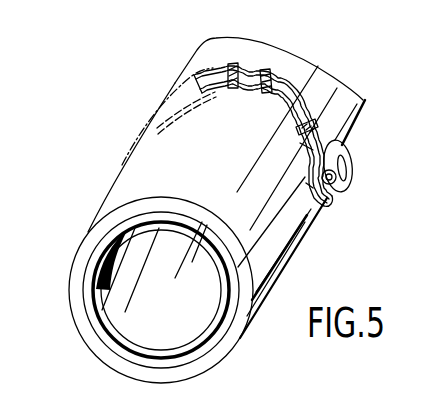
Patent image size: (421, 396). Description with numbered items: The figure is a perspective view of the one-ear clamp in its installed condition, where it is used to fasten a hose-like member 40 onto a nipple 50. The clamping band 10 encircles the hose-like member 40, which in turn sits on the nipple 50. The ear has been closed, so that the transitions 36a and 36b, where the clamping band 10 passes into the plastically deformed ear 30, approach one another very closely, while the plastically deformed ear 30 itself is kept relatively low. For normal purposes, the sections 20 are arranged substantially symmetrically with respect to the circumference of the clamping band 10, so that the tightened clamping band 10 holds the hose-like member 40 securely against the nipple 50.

The clamping band 10 is at (145, 114).
The sections 20 is at (293, 83).
The plastically deformed ear 30 is at (354, 167).
The transition 36a is at (310, 185).
The transition 36b is at (310, 188).
The hose-like member 40 is at (80, 267).
The nipple 50 is at (90, 303).